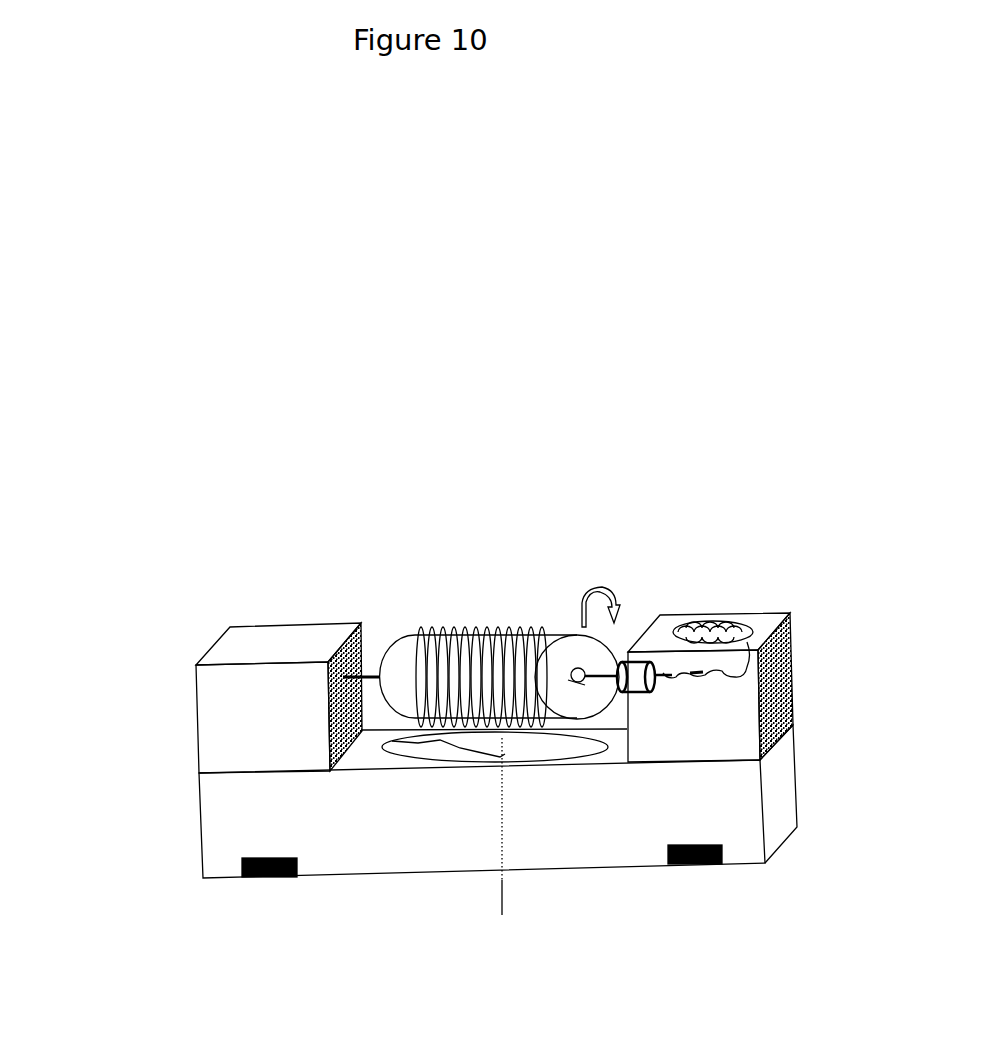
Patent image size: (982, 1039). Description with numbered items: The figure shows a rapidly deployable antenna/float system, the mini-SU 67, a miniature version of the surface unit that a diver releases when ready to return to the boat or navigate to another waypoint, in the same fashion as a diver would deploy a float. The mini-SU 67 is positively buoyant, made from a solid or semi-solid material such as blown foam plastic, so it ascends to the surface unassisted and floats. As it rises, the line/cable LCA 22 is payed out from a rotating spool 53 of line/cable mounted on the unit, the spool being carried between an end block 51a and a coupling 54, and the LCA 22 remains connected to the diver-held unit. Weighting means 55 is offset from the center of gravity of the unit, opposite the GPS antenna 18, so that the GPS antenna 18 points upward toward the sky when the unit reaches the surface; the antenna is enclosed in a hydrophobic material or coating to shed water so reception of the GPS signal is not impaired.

The mini-SU (MSU) 67 is at (170, 590).
The LCA (line/cable) 22 is at (498, 887).
The housing end block 51a is at (266, 702).
The weighting means 55 is at (270, 877).
The rotating spool of line/cable 53 is at (397, 658).
The GPS antenna 18 is at (722, 627).
The motor/drive coupling 54 is at (633, 690).